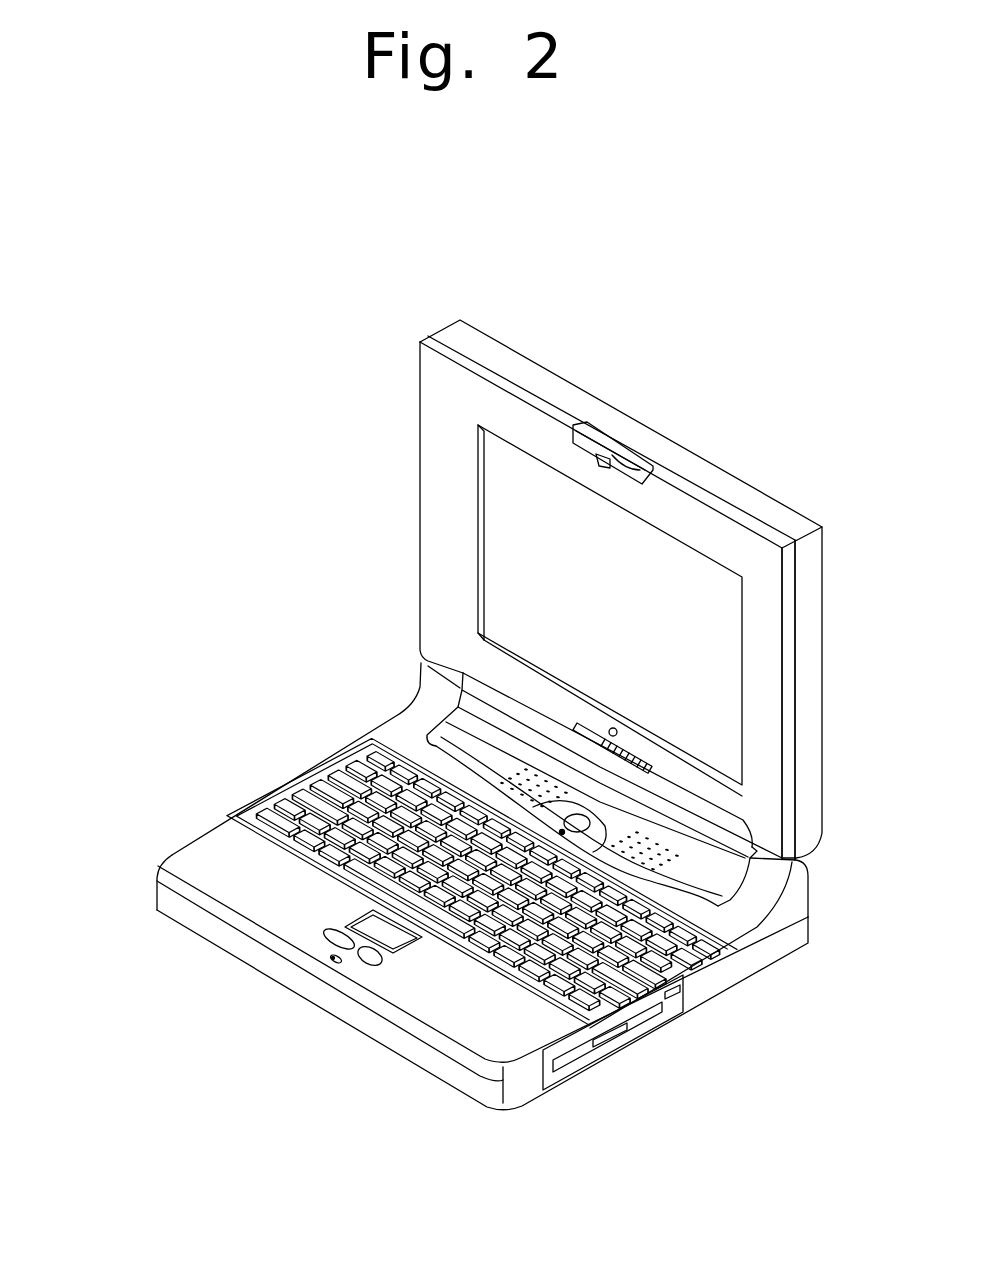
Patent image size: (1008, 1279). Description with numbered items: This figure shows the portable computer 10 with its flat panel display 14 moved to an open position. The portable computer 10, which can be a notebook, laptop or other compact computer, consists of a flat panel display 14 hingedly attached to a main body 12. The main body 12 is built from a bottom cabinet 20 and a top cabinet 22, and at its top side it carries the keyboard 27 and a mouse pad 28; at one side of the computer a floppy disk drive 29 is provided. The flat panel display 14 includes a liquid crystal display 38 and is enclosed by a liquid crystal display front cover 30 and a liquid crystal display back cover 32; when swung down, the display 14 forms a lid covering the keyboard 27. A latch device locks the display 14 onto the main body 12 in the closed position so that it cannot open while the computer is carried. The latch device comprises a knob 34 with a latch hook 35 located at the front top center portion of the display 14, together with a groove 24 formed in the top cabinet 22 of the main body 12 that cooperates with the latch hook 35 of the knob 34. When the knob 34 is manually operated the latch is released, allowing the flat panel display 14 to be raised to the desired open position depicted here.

The portable computer 10 is at (243, 447).
The main body 12 is at (161, 807).
The flat panel display 14 is at (428, 322).
The bottom cabinet 20 is at (180, 912).
The top cabinet 22 is at (166, 877).
The groove 24 is at (330, 960).
The keyboard 27 is at (273, 817).
The mouse pad 28 is at (397, 942).
The floppy disk drive 29 is at (637, 1020).
The liquid crystal display front cover 30 is at (788, 593).
The liquid crystal display back cover 32 is at (760, 505).
The knob 34 is at (622, 457).
The latch hook 35 is at (600, 468).
The liquid crystal display 38 is at (730, 712).